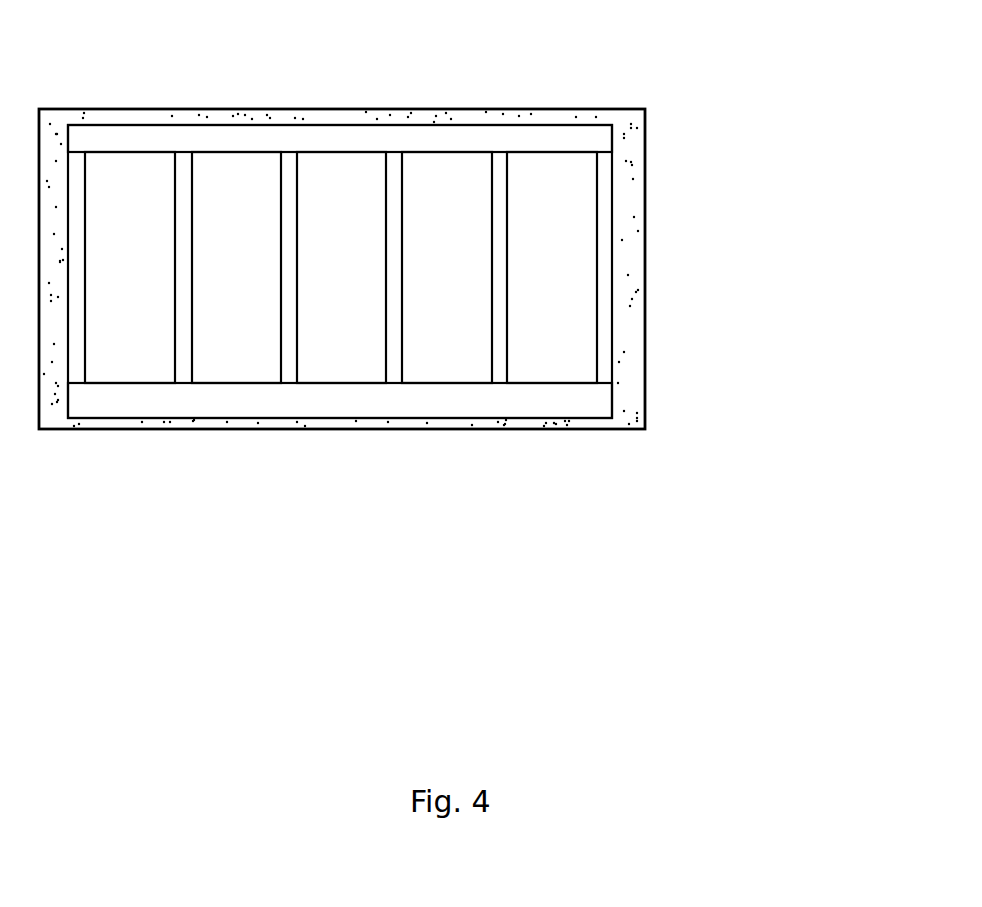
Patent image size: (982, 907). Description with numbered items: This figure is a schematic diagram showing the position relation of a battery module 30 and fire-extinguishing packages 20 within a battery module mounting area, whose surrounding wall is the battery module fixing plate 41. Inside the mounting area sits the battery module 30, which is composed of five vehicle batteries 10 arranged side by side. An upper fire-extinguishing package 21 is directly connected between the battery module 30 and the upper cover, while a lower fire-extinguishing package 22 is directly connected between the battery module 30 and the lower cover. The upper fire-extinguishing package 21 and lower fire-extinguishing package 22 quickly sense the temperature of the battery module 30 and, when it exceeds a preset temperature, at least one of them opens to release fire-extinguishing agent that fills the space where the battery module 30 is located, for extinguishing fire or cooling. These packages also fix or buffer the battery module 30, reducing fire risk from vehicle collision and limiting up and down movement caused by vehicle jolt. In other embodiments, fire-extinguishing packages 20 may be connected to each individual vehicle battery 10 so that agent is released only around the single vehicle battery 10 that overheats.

The vehicle battery 10 is at (117, 333).
The fire-extinguishing package 20 is at (454, 218).
The upper fire-extinguishing package 21 is at (318, 143).
The lower fire-extinguishing package 22 is at (597, 408).
The battery module 30 is at (572, 520).
The battery module fixing plate 41 is at (633, 165).